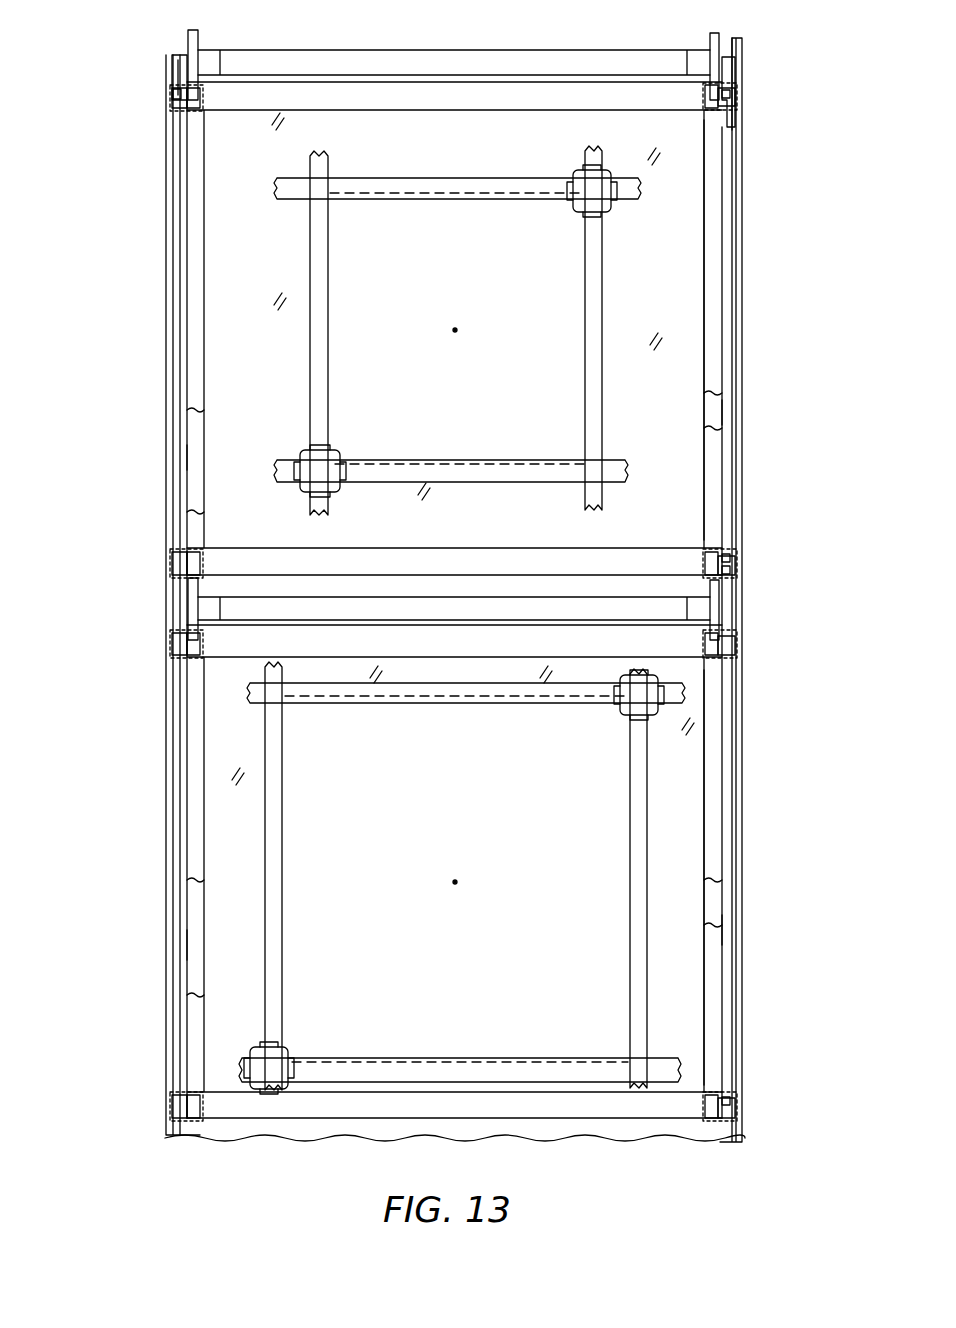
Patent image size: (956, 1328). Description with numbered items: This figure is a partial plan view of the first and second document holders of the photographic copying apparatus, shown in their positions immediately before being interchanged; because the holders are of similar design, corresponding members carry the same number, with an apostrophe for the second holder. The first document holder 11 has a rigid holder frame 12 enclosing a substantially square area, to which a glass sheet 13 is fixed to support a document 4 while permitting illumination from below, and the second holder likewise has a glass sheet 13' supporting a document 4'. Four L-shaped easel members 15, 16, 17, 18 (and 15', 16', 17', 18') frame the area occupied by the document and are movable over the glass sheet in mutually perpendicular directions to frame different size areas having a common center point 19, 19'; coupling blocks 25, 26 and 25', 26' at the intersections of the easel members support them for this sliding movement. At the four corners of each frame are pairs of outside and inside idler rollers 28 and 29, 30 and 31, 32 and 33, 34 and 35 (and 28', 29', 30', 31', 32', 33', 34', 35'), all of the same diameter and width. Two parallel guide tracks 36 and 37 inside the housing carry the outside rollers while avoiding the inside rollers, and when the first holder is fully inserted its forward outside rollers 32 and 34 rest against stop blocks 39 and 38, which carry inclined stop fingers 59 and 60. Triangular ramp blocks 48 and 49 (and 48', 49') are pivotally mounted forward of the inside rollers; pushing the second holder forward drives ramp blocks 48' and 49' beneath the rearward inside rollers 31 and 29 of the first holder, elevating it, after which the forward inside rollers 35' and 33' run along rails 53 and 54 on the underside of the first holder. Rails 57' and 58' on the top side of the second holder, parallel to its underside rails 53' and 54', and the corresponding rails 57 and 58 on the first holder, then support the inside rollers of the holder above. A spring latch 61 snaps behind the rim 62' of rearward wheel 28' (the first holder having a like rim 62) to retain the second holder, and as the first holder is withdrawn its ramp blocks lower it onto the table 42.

The document 4 is at (454, 342).
The document 4' is at (454, 887).
The document holder 11 is at (178, 295).
The holder frame 12 is at (735, 307).
The glass sheet 13 is at (682, 330).
The glass sheet 13' is at (683, 877).
The easel member 15 is at (451, 447).
The easel member 15' is at (460, 1041).
The easel member 16 is at (284, 333).
The easel member 16' is at (248, 876).
The easel member 17 is at (457, 167).
The easel member 17' is at (466, 711).
The easel member 18 is at (624, 328).
The easel member 18' is at (664, 878).
The center point 19 is at (489, 348).
The center point 19' is at (493, 905).
The coupling block 25 is at (336, 453).
The coupling block 25' is at (304, 1047).
The coupling block 26 is at (566, 176).
The coupling block 26' is at (602, 705).
The outside idler roller 28 is at (753, 563).
The outside idler roller 28' is at (738, 1139).
The inside idler roller 29 is at (698, 548).
The inside idler roller 29' is at (707, 1131).
The outside idler roller 30 is at (149, 555).
The outside idler roller 30' is at (136, 1100).
The inside idler roller 31 is at (210, 549).
The inside idler roller 31' is at (206, 1137).
The outside idler roller 32 is at (153, 100).
The outside idler roller 32' is at (153, 632).
The inside idler roller 33 is at (215, 98).
The inside idler roller 33' is at (216, 643).
The outside idler roller 34 is at (755, 97).
The outside idler roller 34' is at (757, 644).
The inside idler roller 35 is at (693, 98).
The inside idler roller 35' is at (691, 643).
The guide track 36 is at (737, 42).
The guide track 37 is at (183, 184).
The stop block 38 is at (727, 63).
The stop block 39 is at (182, 58).
The table 42 is at (354, 1140).
The ramp block 48 is at (220, 55).
The ramp block 48' is at (158, 607).
The ramp block 49 is at (684, 54).
The ramp block 49' is at (682, 607).
The rail 53 is at (681, 412).
The rail 53' is at (690, 920).
The rail 54 is at (220, 442).
The rail 54' is at (220, 932).
The rail 57 is at (684, 422).
The rail 57' is at (687, 924).
The rail 58 is at (226, 436).
The rail 58' is at (228, 921).
The stop finger 59 is at (176, 93).
The stop finger 60 is at (730, 93).
The spring latch 61 is at (730, 577).
The rim 62 is at (759, 546).
The rim 62' is at (764, 1092).